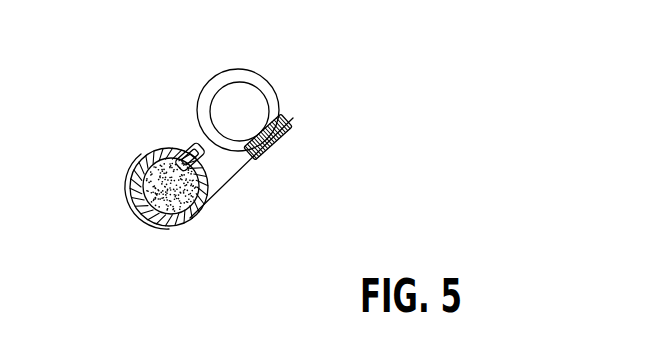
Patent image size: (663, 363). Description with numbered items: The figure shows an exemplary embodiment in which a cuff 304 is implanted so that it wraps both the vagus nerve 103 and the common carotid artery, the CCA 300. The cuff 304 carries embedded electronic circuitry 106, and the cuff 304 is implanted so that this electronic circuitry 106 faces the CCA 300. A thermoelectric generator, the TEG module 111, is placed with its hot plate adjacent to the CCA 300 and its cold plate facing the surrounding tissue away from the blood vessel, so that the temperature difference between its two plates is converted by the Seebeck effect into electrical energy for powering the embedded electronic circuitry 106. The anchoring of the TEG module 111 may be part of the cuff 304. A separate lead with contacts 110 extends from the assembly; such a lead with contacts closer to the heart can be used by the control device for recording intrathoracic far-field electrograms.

The CCA 300 is at (240, 73).
The TEG module 111 is at (293, 140).
The lead with contact(s) 110 is at (236, 173).
The vagus nerve 103 is at (139, 216).
The cuff 304 is at (184, 225).
The electronic circuitry 106 is at (172, 143).